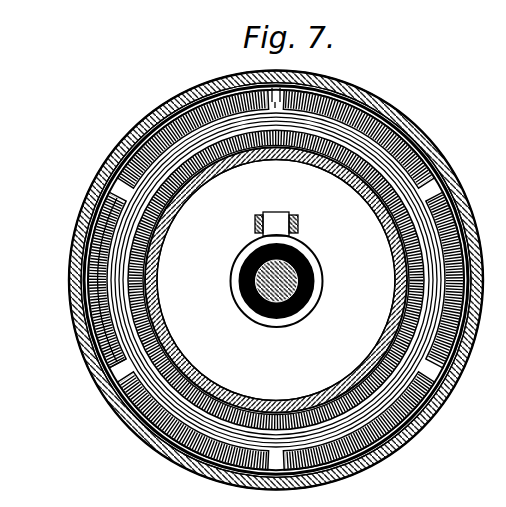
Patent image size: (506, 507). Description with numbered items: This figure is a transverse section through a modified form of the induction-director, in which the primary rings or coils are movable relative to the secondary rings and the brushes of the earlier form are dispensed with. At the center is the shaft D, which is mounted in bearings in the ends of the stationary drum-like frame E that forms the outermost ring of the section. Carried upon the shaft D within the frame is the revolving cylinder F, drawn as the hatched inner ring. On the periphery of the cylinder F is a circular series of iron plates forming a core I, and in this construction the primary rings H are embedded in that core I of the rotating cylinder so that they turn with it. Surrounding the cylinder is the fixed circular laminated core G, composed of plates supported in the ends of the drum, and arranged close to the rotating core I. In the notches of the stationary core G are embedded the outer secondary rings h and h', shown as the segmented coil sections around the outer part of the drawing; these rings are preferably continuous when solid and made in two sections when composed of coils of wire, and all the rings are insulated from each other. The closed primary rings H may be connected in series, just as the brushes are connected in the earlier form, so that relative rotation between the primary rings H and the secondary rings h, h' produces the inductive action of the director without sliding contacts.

The drum-like frame E is at (418, 152).
The core I is at (276, 295).
The laminated core G is at (150, 136).
The secondary ring h' is at (73, 281).
The secondary ring h is at (88, 386).
The primary rings H is at (130, 323).
The revolving cylinder F is at (388, 325).
The hub ring I' is at (281, 269).
The shaft D is at (275, 320).